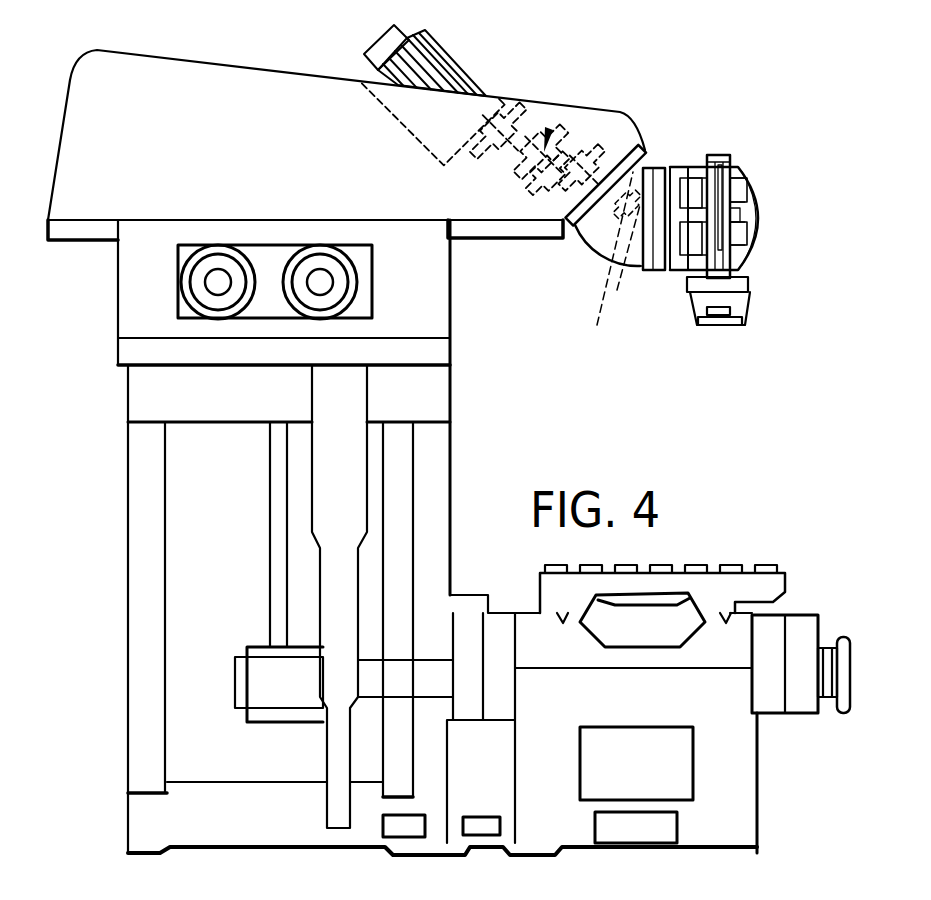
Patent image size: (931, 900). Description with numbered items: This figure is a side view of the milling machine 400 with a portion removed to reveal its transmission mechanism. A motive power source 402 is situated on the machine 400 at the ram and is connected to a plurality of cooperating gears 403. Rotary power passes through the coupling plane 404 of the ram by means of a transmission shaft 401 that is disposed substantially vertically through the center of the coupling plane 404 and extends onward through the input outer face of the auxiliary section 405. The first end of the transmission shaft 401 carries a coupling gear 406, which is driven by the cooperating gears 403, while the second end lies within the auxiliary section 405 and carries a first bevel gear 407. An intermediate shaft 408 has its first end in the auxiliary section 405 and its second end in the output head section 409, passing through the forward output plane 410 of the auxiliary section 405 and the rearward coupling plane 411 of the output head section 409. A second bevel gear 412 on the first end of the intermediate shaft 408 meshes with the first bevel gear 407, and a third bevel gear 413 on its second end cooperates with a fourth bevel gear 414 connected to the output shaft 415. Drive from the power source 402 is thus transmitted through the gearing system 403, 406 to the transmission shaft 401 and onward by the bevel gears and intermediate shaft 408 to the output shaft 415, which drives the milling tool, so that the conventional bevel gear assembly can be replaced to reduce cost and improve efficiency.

The machine 400 is at (466, 268).
The transmission shaft 401 is at (582, 147).
The motive power source 402 is at (453, 78).
The plurality of cooperating gears 403 is at (575, 145).
The coupling plane 404 is at (646, 168).
The auxiliary section 405 is at (607, 260).
The coupling gear 406 is at (548, 128).
The first bevel gear 407 is at (597, 243).
The intermediate shaft 408 is at (706, 213).
The output head section 409 is at (755, 256).
The forward output plane 410 is at (680, 168).
The rearward coupling plane 411 is at (650, 272).
The second bevel gear 412 is at (607, 313).
The third bevel gear 413 is at (697, 168).
The fourth bevel gear 414 is at (708, 170).
The output shaft 415 is at (730, 232).